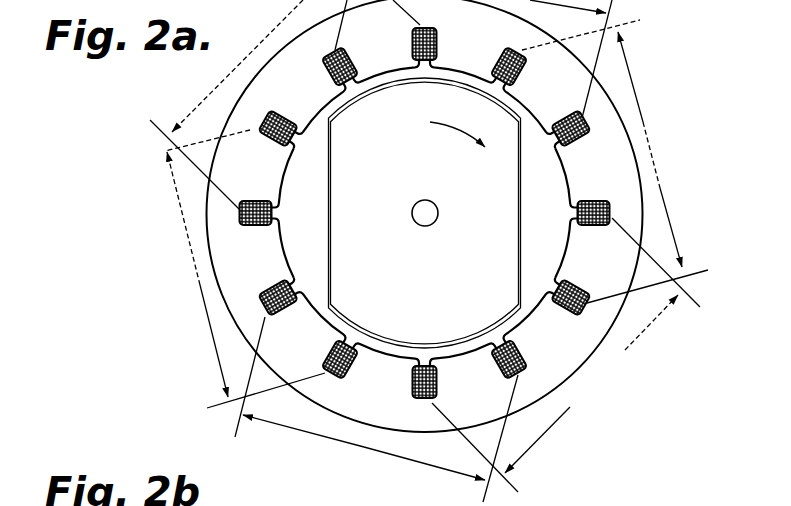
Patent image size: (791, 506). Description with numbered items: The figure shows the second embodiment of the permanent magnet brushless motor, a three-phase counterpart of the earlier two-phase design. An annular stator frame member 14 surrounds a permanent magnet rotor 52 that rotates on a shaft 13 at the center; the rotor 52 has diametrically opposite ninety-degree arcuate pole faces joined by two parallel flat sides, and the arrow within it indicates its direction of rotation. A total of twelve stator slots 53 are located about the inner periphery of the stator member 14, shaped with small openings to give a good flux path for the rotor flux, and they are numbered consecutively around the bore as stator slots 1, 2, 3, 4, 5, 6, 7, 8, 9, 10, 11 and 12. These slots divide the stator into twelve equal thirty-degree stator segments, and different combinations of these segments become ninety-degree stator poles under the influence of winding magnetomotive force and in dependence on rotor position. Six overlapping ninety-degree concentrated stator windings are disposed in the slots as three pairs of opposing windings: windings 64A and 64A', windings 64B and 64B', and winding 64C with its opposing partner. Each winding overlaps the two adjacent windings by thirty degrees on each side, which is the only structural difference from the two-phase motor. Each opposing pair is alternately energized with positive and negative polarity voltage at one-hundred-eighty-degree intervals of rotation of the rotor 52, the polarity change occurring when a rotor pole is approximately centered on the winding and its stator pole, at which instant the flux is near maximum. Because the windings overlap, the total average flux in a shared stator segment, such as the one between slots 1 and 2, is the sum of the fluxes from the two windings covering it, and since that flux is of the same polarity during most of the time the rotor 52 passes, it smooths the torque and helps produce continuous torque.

The stator slot No. 1 is at (565, 53).
The stator slot No. 2 is at (581, 73).
The stator slot No. 3 is at (639, 254).
The stator slot No. 4 is at (629, 296).
The stator slot No. 5 is at (507, 421).
The stator slot No. 6 is at (466, 429).
The stator slot No. 7 is at (282, 374).
The stator slot No. 8 is at (266, 358).
The stator slot No. 9 is at (211, 175).
The stator slot No. 10 is at (231, 129).
The stator slot No. 11 is at (338, 43).
The stator slot No. 12 is at (433, 30).
The shaft 13 is at (431, 204).
The stator frame member 14 is at (527, 21).
The permanent magnet rotor 52 is at (328, 213).
The stator slots 53 is at (437, 42).
The stator winding 64A is at (650, 149).
The stator winding 64A' is at (193, 274).
The stator winding 64B is at (591, 384).
The stator winding 64B' is at (389, 66).
The stator winding 64C is at (364, 447).